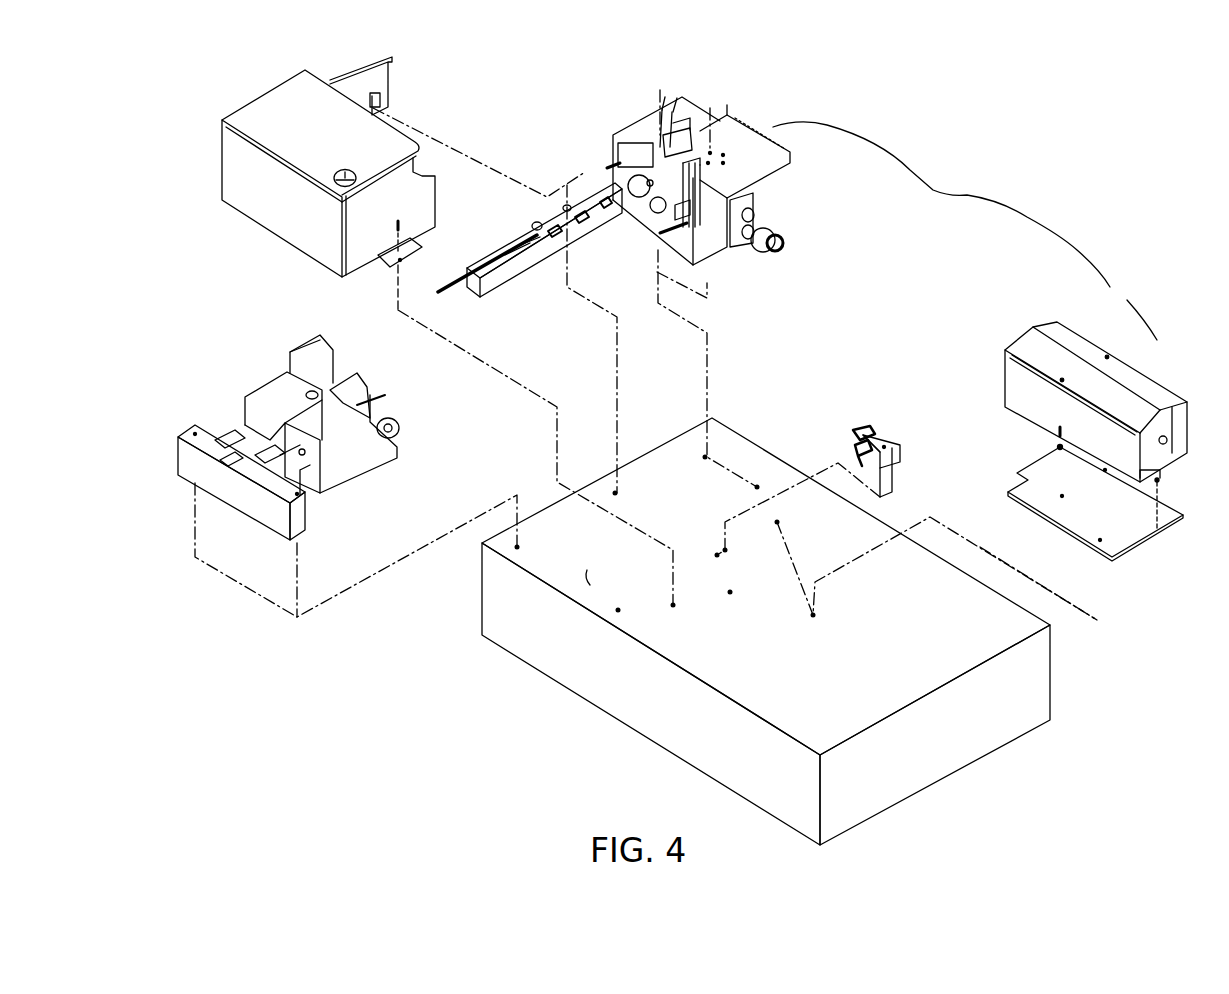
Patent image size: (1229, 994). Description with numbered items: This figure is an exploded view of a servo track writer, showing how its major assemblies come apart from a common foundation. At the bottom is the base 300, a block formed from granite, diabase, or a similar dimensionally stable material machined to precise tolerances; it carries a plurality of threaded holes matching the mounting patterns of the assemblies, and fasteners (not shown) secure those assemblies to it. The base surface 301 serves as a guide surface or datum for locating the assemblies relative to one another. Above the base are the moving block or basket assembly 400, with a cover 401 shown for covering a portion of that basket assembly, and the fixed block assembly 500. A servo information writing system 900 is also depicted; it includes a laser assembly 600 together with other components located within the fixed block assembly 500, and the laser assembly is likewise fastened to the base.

The base 300 is at (907, 757).
The base surface 301 is at (585, 580).
The moving block or basket assembly 400 is at (259, 359).
The cover 401 is at (270, 110).
The fixed block assembly 500 is at (636, 108).
The laser assembly 600 is at (1080, 327).
The servo information writing system 900 is at (938, 192).